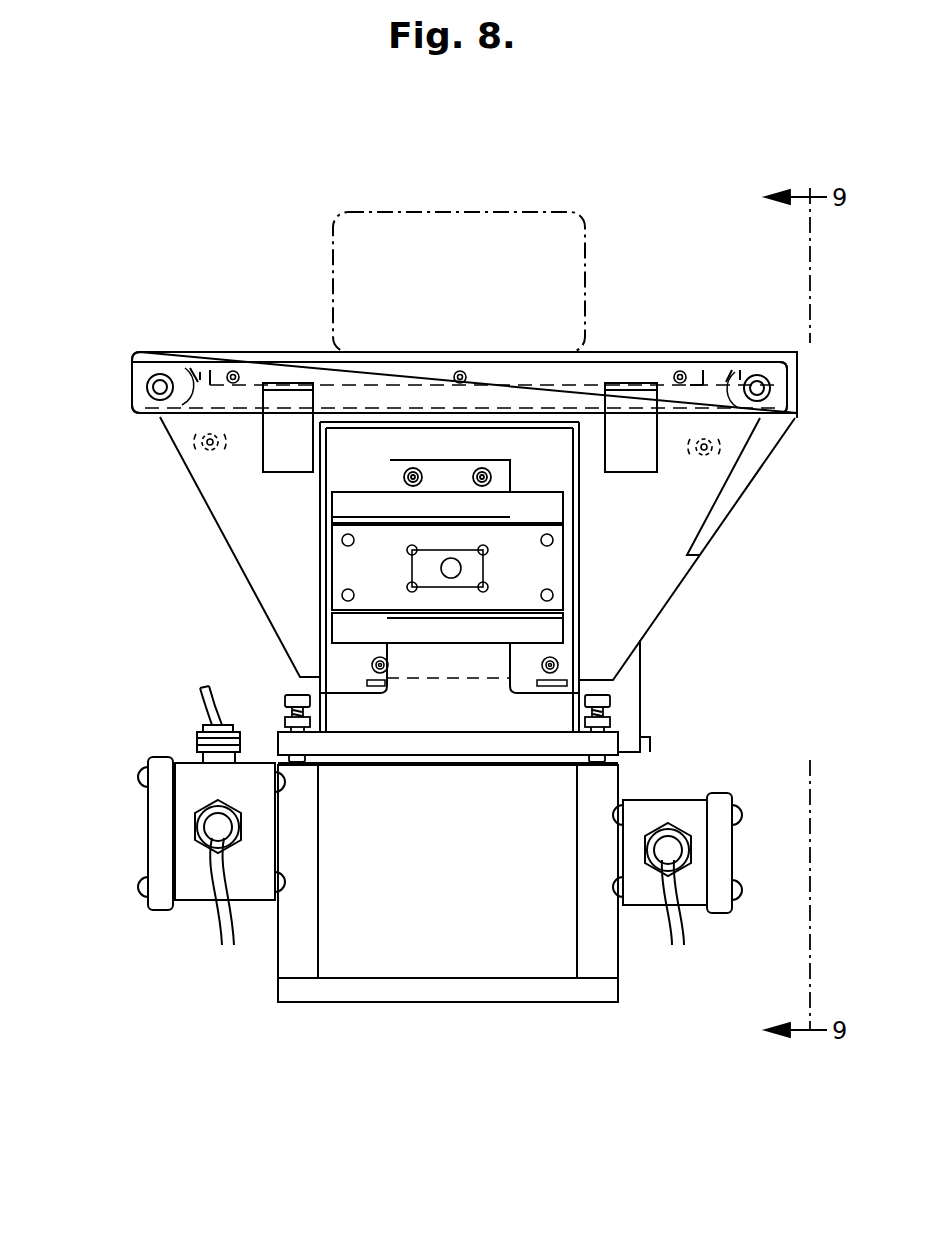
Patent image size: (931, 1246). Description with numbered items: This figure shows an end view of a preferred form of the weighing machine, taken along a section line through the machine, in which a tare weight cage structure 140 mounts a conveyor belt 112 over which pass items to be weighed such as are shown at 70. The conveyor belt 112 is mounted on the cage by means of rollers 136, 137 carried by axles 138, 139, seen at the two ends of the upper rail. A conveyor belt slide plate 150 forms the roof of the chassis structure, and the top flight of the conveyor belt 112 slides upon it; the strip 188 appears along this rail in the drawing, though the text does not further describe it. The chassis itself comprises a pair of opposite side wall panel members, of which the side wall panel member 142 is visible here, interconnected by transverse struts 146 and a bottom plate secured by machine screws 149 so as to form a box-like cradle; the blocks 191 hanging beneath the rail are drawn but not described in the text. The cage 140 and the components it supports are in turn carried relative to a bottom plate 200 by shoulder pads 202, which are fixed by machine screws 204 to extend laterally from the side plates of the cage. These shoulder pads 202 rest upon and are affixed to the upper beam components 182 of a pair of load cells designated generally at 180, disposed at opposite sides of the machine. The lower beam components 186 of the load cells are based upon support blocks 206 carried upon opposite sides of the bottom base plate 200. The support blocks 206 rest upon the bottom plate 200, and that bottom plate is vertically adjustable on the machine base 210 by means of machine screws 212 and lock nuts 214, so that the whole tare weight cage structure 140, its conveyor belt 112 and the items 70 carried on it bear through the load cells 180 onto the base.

The items to be weighed 70 is at (463, 212).
The conveyor belt 112 is at (428, 352).
The roller 136 is at (770, 362).
The roller 137 is at (162, 362).
The axle 138 is at (771, 388).
The axle 139 is at (147, 388).
The tare weight cage structure 140 is at (668, 603).
The side wall panel member 142 is at (250, 553).
The transverse struts 146 is at (198, 444).
The machine screws 149 is at (372, 665).
The conveyor belt slide plate 150 is at (262, 352).
The load cell 180 is at (553, 567).
The upper beam component 182 is at (372, 495).
The lower beam component 186 is at (340, 622).
The rail inner strip 188 is at (533, 373).
The hanging blocks 191 is at (263, 455).
The bottom plate 200 is at (513, 738).
The shoulder pads 202 is at (496, 466).
The machine screws 204 is at (470, 464).
The support blocks 206 is at (433, 712).
The machine base 210 is at (456, 893).
The machine screws 212 is at (284, 702).
The lock nuts 214 is at (325, 722).